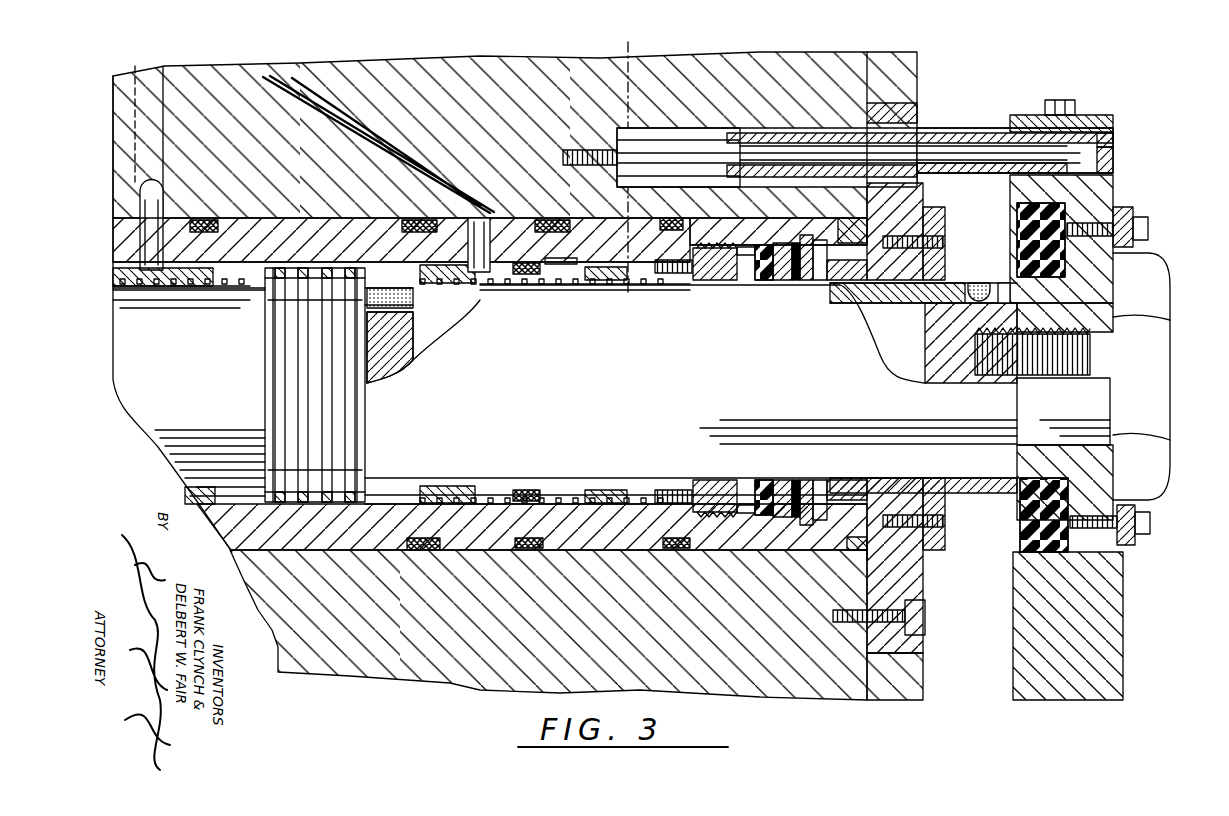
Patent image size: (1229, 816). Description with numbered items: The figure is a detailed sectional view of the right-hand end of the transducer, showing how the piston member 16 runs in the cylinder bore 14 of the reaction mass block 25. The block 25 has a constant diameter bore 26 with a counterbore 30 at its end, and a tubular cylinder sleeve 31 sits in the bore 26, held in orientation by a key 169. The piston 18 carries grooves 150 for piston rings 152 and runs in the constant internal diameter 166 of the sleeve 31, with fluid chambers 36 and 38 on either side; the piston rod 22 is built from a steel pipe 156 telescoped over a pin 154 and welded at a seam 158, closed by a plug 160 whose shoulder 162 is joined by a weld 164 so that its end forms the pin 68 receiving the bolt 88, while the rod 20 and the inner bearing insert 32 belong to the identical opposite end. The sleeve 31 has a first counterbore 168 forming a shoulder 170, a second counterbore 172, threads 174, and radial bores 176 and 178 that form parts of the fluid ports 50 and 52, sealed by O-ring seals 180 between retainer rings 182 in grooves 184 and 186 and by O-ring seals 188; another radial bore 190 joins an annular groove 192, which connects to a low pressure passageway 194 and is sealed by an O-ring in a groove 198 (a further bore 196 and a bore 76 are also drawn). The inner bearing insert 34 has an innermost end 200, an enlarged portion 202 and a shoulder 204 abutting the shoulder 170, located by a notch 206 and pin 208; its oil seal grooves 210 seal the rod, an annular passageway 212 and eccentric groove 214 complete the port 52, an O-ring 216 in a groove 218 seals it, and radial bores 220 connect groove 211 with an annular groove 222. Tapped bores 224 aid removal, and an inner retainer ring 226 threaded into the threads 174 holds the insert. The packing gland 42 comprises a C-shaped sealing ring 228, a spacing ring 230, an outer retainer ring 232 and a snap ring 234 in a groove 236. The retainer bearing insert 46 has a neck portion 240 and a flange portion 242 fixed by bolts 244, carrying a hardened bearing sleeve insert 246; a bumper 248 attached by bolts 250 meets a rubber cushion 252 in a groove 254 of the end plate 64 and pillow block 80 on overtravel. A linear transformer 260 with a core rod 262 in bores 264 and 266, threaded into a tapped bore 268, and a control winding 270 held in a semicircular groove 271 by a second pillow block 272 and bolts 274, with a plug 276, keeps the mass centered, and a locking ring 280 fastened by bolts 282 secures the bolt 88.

The cylinder bore 14 is at (368, 262).
The piston member 16 is at (285, 512).
The piston 18 is at (276, 405).
The piston rod 20 is at (199, 360).
The piston rod 22 is at (677, 386).
The block 25 is at (765, 83).
The cylindrical bore 26 is at (610, 222).
The counterbore 30 is at (911, 104).
The tubular cylinder sleeve 31 is at (327, 245).
The inner bearing insert 32 is at (210, 268).
The inner bearing insert 34 is at (609, 273).
The fluid chamber 36 is at (250, 268).
The fluid chamber 38 is at (380, 268).
The low pressure packing gland 42 is at (765, 302).
The retainer bearing insert 46 is at (906, 219).
The fluid port 50 is at (172, 199).
The fluid port 52 is at (370, 152).
The end plate 64 is at (1120, 636).
The pin 68 is at (1062, 300).
The radial bore 76 is at (1076, 478).
The pillow block 80 is at (1117, 190).
The bolt 88 is at (1168, 392).
The grooves 150 is at (300, 356).
The piston rings 152 is at (295, 268).
The pin 154 is at (400, 362).
The steel pipe 156 is at (455, 306).
The circumferential seam 158 is at (378, 292).
The plug 160 is at (937, 333).
The shoulder 162 is at (1002, 283).
The circumferential weld 164 is at (980, 283).
The constant internal diameter 166 is at (418, 506).
The first counterbore 168 is at (605, 250).
The key 169 is at (867, 561).
The annular shoulder 170 is at (572, 512).
The second counterbore 172 is at (851, 537).
The threads 174 is at (730, 250).
The radial bore 176 is at (142, 238).
The radial bore 178 is at (490, 236).
The O-ring seals 180 is at (428, 220).
The retainer rings 182 is at (414, 551).
The groove 184 is at (537, 232).
The groove 186 is at (406, 221).
The O-ring seals 188 is at (210, 221).
The radial bore 190 is at (703, 218).
The annular groove 192 is at (672, 218).
The fluid passageway 194 is at (628, 95).
The groove 196 is at (690, 220).
The groove 198 is at (690, 250).
The innermost end 200 is at (540, 292).
The enlarged outer portion 202 is at (608, 292).
The annular shoulder 204 is at (610, 506).
The alignment notch 206 is at (572, 290).
The pin 208 is at (565, 256).
The annular oil seal grooves 210 is at (495, 478).
The oil seal groove 211 is at (645, 292).
The annular fluid passageway 212 is at (470, 266).
The eccentric groove 214 is at (478, 301).
The O-ring 216 is at (510, 288).
The annular groove 218 is at (541, 267).
The radial bores 220 is at (672, 256).
The annular groove 222 is at (690, 512).
The tapped bores 224 is at (695, 292).
The inner retainer ring 226 is at (712, 292).
The resilient sealing ring 228 is at (800, 296).
The annular spacing ring 230 is at (750, 293).
The outer retainer ring 232 is at (820, 479).
The snap ring 234 is at (815, 243).
The annular groove 236 is at (813, 240).
The neck portion 240 is at (862, 478).
The flange portion 242 is at (878, 206).
The bolts 244 is at (926, 616).
The hardened bearing sleeve insert 246 is at (890, 479).
The annular ring bumper 248 is at (936, 210).
The bolts 250 is at (946, 240).
The annular rubber cushion 252 is at (1017, 232).
The annular groove 254 is at (1063, 220).
The linear transformer 260 is at (946, 120).
The core rod 262 is at (720, 172).
The bore 264 is at (922, 118).
The bore 266 is at (690, 128).
The tapped bore 268 is at (604, 150).
The control winding 270 is at (986, 128).
The semicircular groove 271 is at (1115, 156).
The second pillow block 272 is at (1110, 116).
The bolts 274 is at (1070, 104).
The plug 276 is at (1115, 138).
The locking ring 280 is at (1135, 215).
The bolts 282 is at (1150, 228).